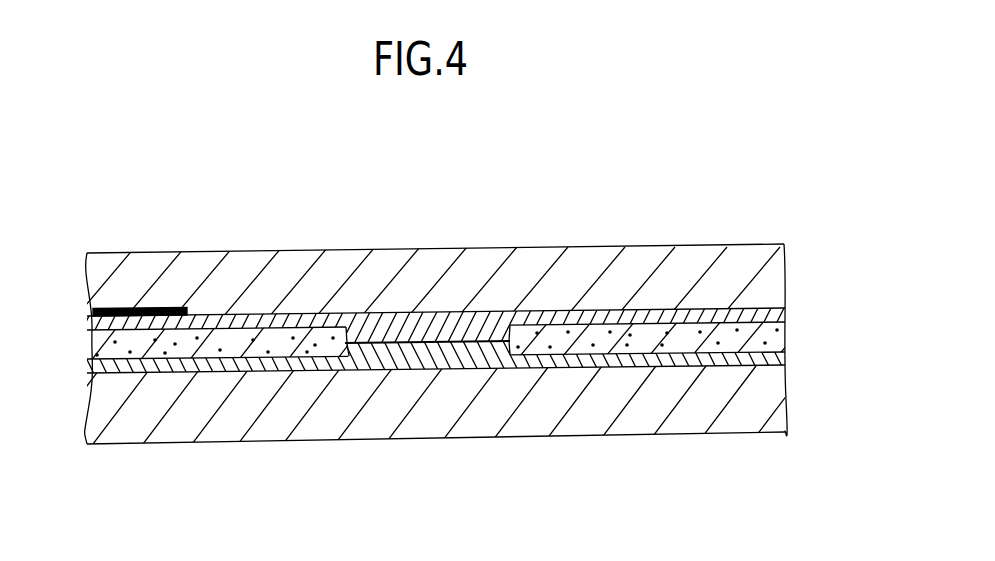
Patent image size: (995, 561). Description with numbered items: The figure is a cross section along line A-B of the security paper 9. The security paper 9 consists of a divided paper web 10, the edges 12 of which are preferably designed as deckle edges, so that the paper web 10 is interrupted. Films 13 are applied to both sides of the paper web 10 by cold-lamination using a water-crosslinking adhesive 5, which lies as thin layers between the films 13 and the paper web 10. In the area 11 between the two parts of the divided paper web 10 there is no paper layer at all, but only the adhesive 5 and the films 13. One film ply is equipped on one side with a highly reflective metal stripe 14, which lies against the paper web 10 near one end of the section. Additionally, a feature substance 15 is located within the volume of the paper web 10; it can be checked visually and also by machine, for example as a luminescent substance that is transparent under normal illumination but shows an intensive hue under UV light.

The water-crosslinking adhesive 5 is at (785, 352).
The security paper 9 is at (822, 235).
The paper web 10 is at (599, 342).
The area 11 is at (440, 328).
The edges 12 is at (347, 351).
The films 13 is at (697, 282).
The highly reflective metal stripe 14 is at (130, 307).
The feature substance 15 is at (175, 345).